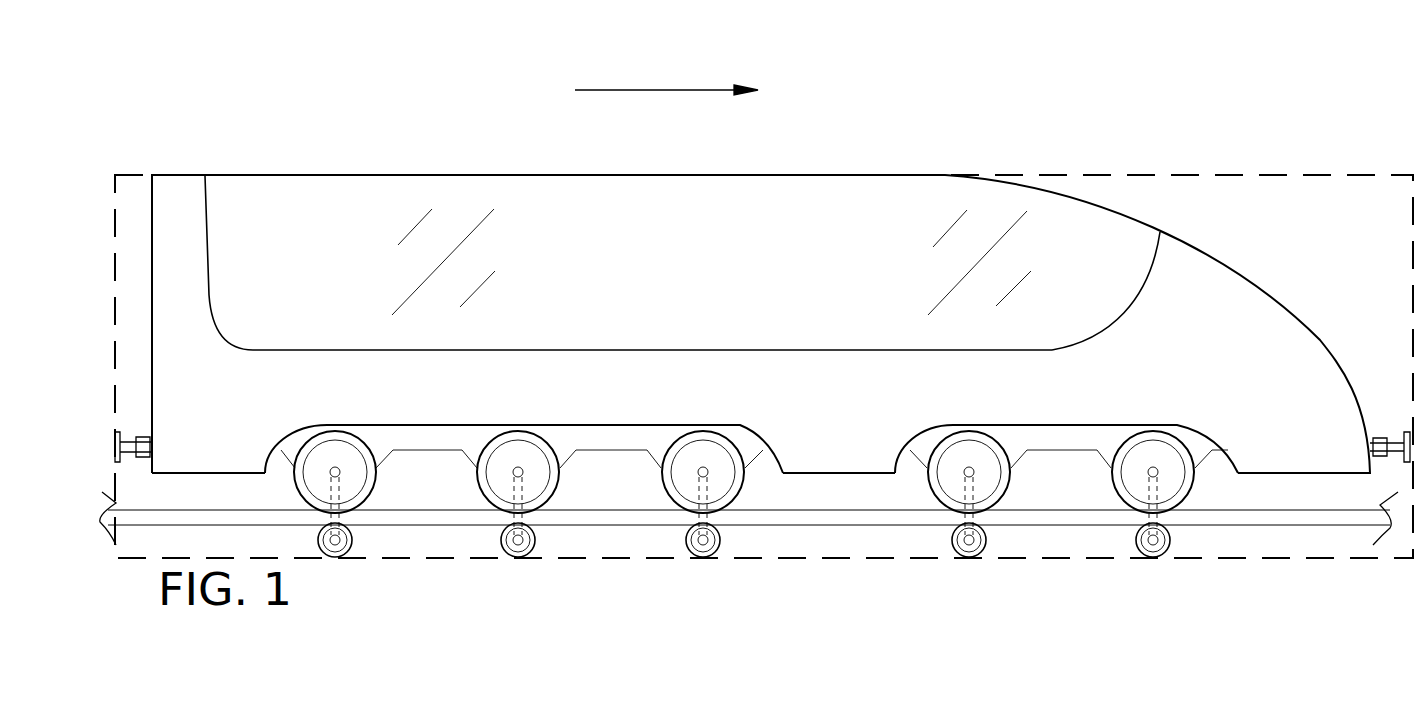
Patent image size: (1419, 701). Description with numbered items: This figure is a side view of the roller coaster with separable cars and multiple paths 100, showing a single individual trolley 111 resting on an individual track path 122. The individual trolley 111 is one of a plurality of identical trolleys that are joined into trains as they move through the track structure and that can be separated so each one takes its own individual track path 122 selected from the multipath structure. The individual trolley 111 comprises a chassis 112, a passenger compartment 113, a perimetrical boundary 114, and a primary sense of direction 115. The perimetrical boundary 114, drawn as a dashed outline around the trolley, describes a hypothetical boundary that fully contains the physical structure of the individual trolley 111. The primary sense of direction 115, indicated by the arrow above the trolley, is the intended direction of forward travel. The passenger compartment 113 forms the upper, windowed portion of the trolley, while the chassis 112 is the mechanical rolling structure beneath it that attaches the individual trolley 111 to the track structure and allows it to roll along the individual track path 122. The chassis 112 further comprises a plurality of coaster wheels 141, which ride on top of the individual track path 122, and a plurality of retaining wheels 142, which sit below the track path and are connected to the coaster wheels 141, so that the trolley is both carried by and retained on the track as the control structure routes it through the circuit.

The roller coaster with separable cars and multiple paths 100 is at (1055, 120).
The individual trolley 111 is at (1238, 272).
The chassis 112 is at (1058, 440).
The passenger compartment 113 is at (1183, 282).
The perimetrical boundary 114 is at (943, 214).
The primary sense of direction 115 is at (666, 73).
The individual track path 122 is at (1267, 518).
The coaster wheels 141 is at (737, 487).
The retaining wheels 142 is at (717, 542).